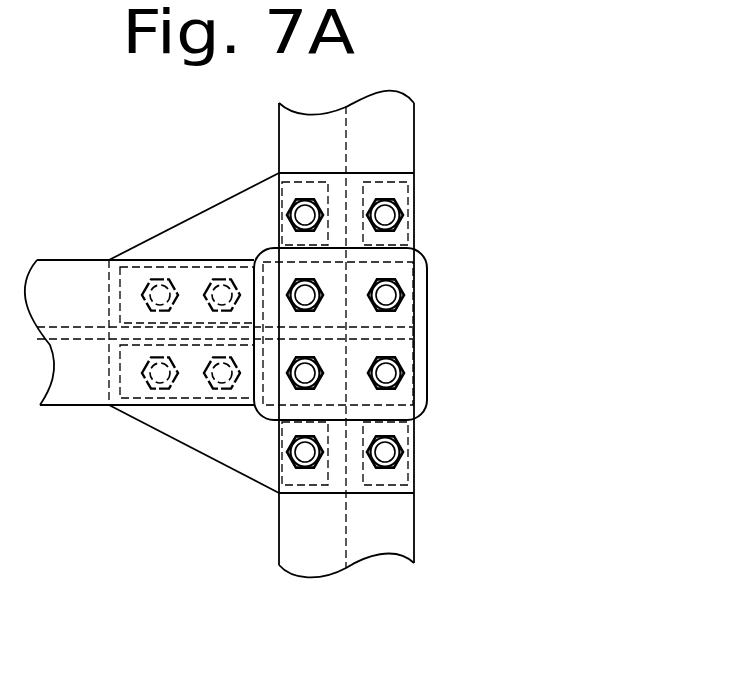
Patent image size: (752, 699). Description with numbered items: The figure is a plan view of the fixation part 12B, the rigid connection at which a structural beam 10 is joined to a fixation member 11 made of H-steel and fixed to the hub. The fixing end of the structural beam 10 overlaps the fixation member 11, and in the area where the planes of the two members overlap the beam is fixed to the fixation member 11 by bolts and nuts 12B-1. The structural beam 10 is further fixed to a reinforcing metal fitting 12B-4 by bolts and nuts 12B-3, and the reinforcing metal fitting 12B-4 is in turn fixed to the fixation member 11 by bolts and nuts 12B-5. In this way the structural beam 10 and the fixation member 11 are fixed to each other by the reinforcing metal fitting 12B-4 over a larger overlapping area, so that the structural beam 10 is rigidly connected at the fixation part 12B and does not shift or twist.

The structural beam 10 is at (62, 260).
The fixation member 11 is at (414, 535).
The fixation part 12B is at (470, 165).
The bolts and nuts 12B-1 is at (395, 292).
The bolts and nuts 12B-3 is at (160, 378).
The reinforcing metal fitting 12B-4 is at (195, 215).
The bolts and nuts 12B-5 is at (395, 452).